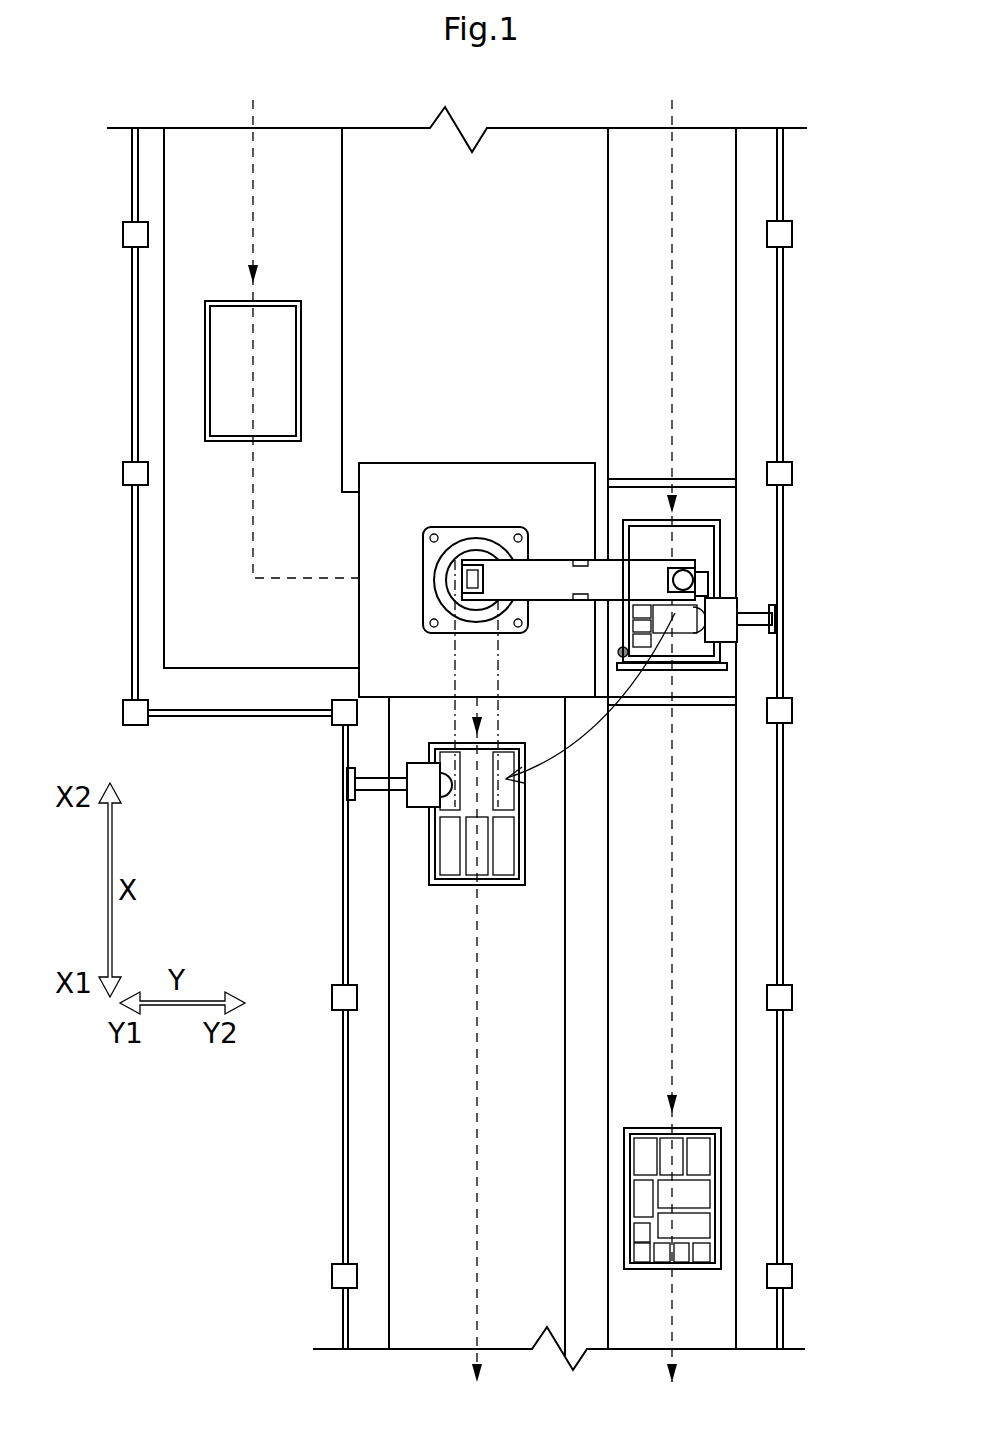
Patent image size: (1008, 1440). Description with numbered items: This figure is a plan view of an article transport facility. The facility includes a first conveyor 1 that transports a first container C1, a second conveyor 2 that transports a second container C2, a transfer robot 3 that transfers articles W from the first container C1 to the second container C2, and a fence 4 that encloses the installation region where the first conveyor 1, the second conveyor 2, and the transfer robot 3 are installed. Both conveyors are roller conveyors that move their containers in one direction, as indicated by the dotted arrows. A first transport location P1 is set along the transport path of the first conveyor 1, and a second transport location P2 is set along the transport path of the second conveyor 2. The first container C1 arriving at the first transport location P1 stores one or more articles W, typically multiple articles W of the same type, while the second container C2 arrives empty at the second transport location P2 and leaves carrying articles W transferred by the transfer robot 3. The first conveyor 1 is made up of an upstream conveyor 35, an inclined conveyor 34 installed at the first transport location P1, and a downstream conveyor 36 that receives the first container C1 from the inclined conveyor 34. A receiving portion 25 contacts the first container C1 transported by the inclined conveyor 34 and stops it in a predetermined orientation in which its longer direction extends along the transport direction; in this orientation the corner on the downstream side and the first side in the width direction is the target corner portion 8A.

The first conveyor 1 is at (740, 352).
The second conveyor 2 is at (158, 407).
The transfer robot 3 is at (562, 570).
The fence 4 is at (132, 335).
The target corner portion 8A is at (618, 652).
The receiving portion 25 is at (727, 670).
The inclined conveyor 34 is at (722, 507).
The upstream conveyor 35 is at (720, 415).
The downstream conveyor 36 is at (720, 785).
The first container C1 is at (652, 520).
The second container C2 is at (305, 347).
The first transport location P1 is at (745, 572).
The second transport location P2 is at (543, 820).
The article W is at (675, 1152).